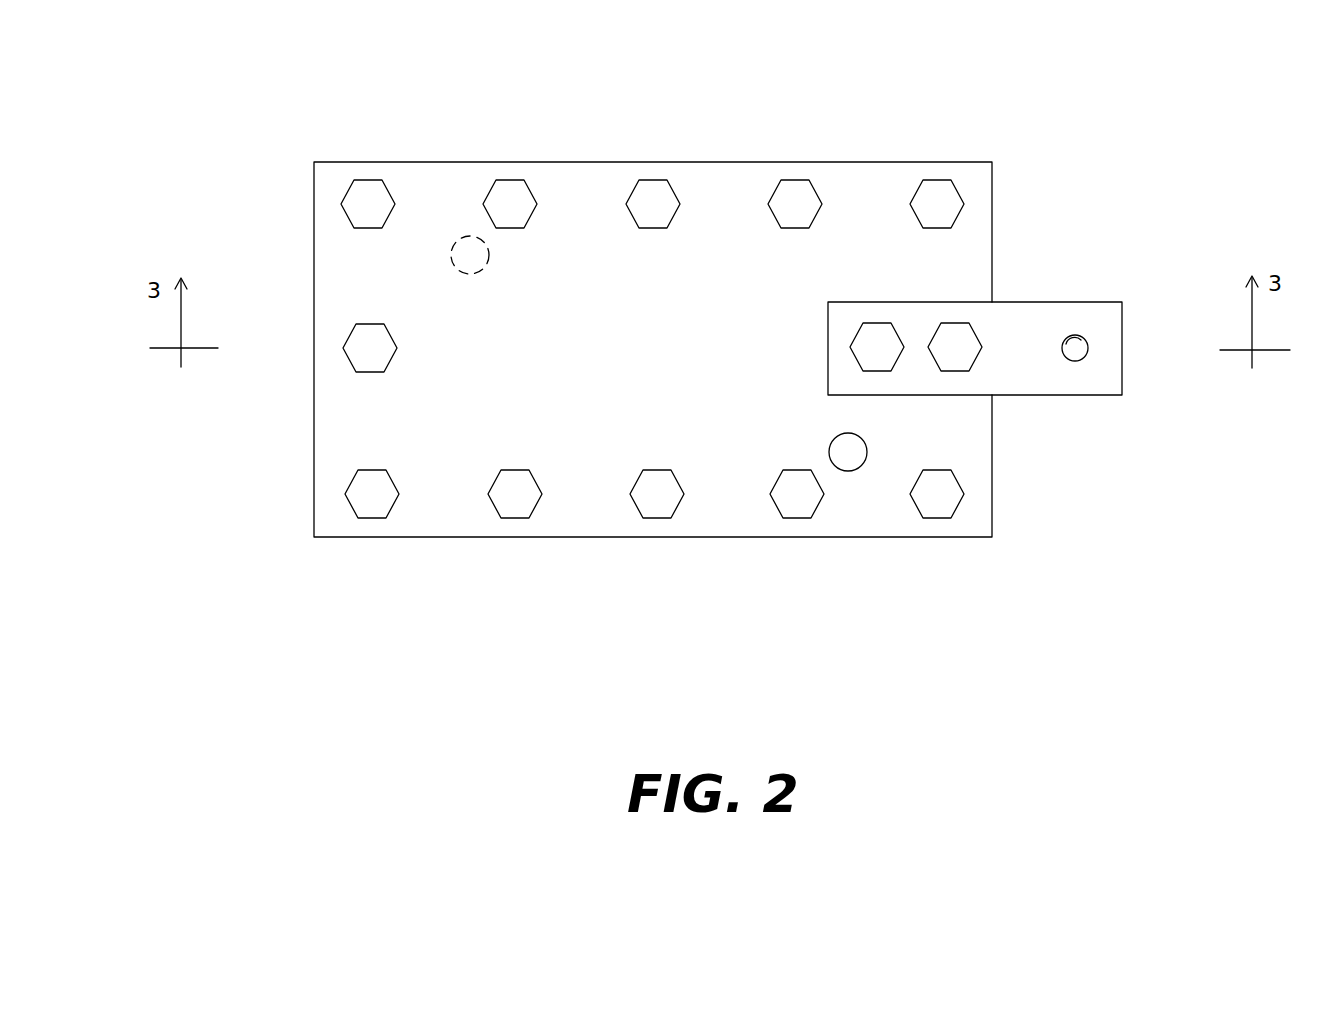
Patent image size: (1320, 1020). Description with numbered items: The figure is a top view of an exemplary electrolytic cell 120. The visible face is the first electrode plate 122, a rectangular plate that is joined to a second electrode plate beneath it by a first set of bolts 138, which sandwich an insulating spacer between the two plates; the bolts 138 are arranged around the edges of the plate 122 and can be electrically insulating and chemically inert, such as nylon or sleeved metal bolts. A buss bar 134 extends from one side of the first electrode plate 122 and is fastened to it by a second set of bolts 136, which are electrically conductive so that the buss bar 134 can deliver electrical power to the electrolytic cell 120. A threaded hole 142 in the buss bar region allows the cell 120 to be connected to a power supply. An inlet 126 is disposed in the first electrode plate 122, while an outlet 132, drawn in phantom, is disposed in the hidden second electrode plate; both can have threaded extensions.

The electrolytic cell 120 is at (1191, 90).
The first electrode plate 122 is at (972, 247).
The inlet 126 is at (848, 471).
The outlet 132 is at (465, 235).
The buss bar 134 is at (1028, 320).
The second set of bolts 136 is at (879, 370).
The first set of bolts 138 is at (370, 180).
The hole 142 is at (1078, 362).